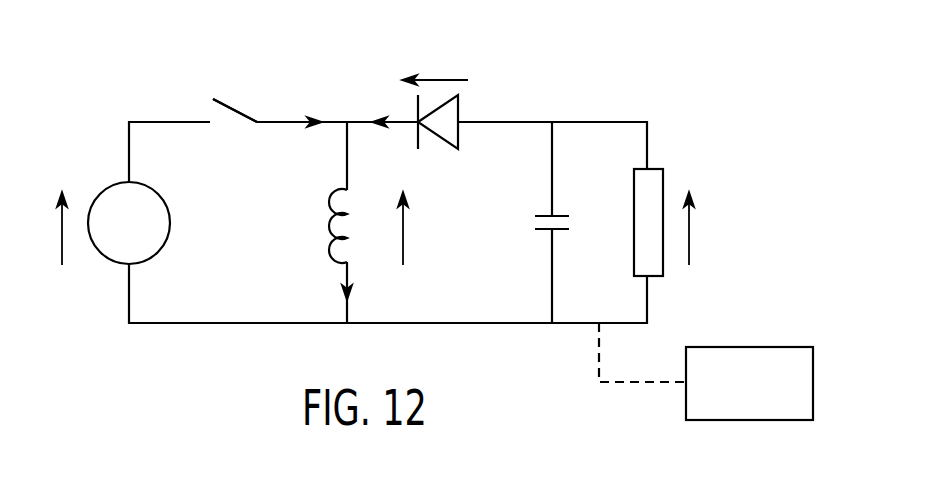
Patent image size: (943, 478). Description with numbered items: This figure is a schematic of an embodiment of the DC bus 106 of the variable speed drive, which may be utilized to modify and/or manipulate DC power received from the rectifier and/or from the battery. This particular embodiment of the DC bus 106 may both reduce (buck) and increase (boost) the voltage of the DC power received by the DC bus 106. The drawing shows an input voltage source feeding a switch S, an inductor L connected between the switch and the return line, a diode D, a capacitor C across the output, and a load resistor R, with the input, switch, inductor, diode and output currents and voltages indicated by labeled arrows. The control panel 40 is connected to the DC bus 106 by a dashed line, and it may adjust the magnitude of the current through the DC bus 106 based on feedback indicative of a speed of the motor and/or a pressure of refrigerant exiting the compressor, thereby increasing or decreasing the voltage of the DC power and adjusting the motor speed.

The DC bus 106 is at (381, 185).
The control panel 40 is at (746, 421).
The switch S is at (235, 123).
The inductor L is at (325, 226).
The diode D is at (438, 134).
The capacitor C is at (539, 225).
The load resistor R is at (637, 222).